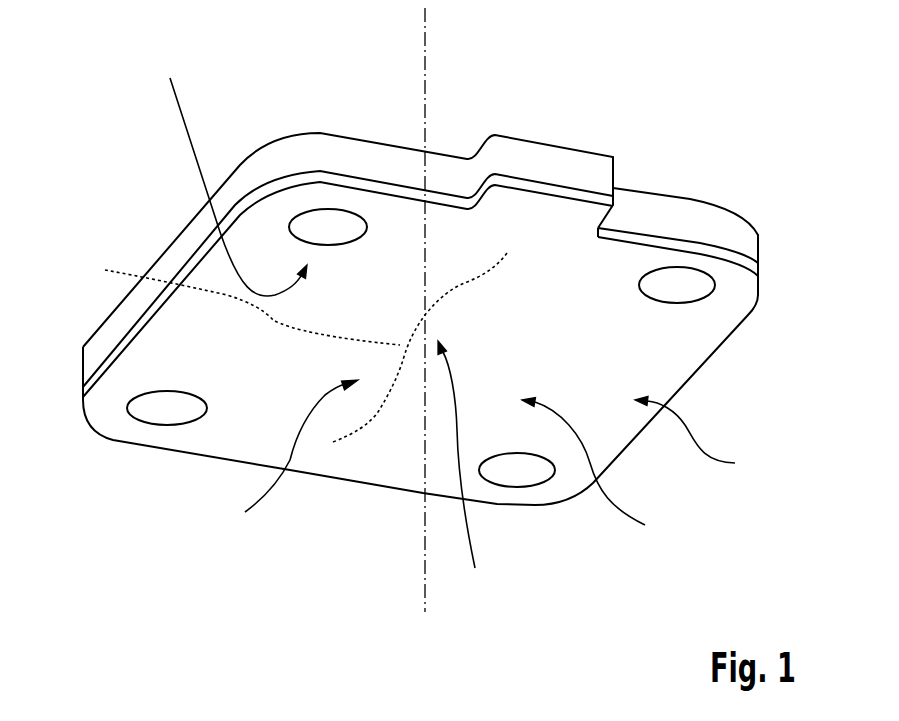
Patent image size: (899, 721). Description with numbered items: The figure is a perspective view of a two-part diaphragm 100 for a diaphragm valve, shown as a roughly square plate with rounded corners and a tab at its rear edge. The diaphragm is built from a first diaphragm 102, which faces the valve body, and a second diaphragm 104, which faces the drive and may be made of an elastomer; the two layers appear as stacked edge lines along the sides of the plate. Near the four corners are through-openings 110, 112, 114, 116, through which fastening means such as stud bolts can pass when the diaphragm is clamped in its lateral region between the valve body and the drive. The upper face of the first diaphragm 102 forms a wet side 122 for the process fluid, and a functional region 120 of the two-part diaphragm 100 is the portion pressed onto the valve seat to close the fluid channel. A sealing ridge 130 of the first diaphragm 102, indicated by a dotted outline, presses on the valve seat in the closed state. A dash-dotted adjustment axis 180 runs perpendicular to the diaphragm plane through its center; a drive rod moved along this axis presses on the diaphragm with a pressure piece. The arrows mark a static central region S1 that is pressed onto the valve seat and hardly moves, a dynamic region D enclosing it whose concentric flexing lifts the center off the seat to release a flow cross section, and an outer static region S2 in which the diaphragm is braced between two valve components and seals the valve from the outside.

The two-part diaphragm 100 is at (443, 256).
The first diaphragm 102 is at (737, 258).
The second diaphragm 104 is at (740, 228).
The through-opening 110 is at (687, 280).
The through-opening 112 is at (528, 472).
The through-opening 114 is at (153, 408).
The through-opening 116 is at (323, 222).
The functional region 120 is at (281, 464).
The wet side 122 is at (227, 170).
The sealing ridge 130 is at (282, 347).
The adjustment axis 180 is at (433, 87).
The static central region S1 is at (464, 476).
The static region S2 is at (707, 441).
The dynamic region D is at (597, 468).